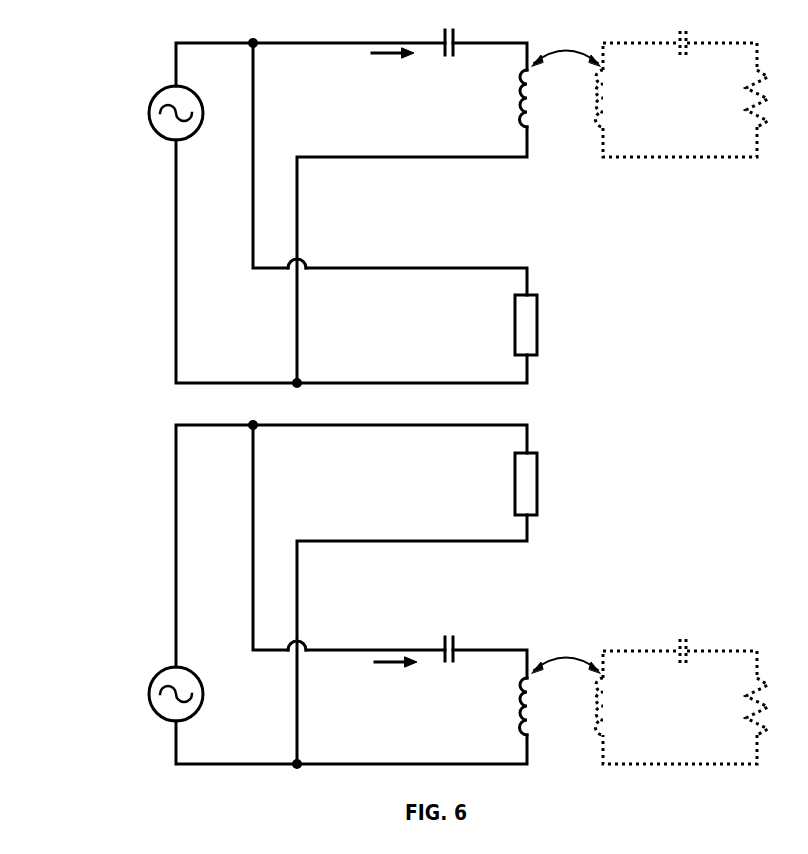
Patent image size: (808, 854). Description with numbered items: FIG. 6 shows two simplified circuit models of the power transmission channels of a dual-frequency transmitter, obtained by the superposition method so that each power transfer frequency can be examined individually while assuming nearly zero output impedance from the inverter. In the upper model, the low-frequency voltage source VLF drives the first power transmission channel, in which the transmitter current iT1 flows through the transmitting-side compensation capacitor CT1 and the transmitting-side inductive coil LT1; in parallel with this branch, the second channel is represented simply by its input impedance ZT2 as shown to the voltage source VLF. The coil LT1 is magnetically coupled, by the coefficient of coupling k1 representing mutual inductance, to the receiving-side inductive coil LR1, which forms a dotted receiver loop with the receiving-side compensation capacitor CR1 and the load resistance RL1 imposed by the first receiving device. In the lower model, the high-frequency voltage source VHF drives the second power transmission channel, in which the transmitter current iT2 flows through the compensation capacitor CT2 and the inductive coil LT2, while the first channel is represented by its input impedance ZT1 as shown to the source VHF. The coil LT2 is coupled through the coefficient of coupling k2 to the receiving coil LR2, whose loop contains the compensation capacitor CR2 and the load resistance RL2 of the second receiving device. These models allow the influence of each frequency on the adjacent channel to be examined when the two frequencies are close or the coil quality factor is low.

The voltage source VLF is at (152, 113).
The voltage source VHF is at (152, 694).
The transmitter current iT1 is at (394, 71).
The transmitter current iT2 is at (396, 679).
The compensation capacitor CT1 is at (457, 62).
The compensation capacitor CT2 is at (457, 669).
The inductive coil LT1 is at (507, 98).
The inductive coil LT2 is at (507, 706).
The coefficient of coupling k1 is at (566, 42).
The coefficient of coupling k2 is at (566, 649).
The input impedance ZT1 is at (550, 484).
The input impedance ZT2 is at (550, 325).
The inductive coil LR1 is at (623, 98).
The inductive coil LR2 is at (623, 706).
The compensation capacitor CR1 is at (678, 62).
The compensation capacitor CR2 is at (678, 669).
The load resistance RL1 is at (736, 98).
The load resistance RL2 is at (734, 706).